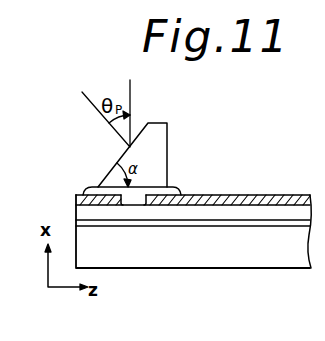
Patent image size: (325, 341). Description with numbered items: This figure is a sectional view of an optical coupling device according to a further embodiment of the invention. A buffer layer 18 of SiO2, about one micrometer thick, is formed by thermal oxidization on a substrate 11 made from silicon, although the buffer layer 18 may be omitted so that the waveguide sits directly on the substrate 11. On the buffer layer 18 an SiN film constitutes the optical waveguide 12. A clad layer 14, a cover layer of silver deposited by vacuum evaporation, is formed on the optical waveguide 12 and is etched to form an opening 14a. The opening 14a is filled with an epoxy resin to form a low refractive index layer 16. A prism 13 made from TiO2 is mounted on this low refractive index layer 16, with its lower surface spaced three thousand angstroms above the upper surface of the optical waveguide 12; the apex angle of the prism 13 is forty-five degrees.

The substrate 11 is at (214, 252).
The optical waveguide 12 is at (172, 221).
The prism 13 is at (157, 136).
The clad layer 14 is at (265, 195).
The opening 14a is at (148, 188).
The low refractive index layer 16 is at (137, 192).
The buffer layer 18 is at (265, 223).